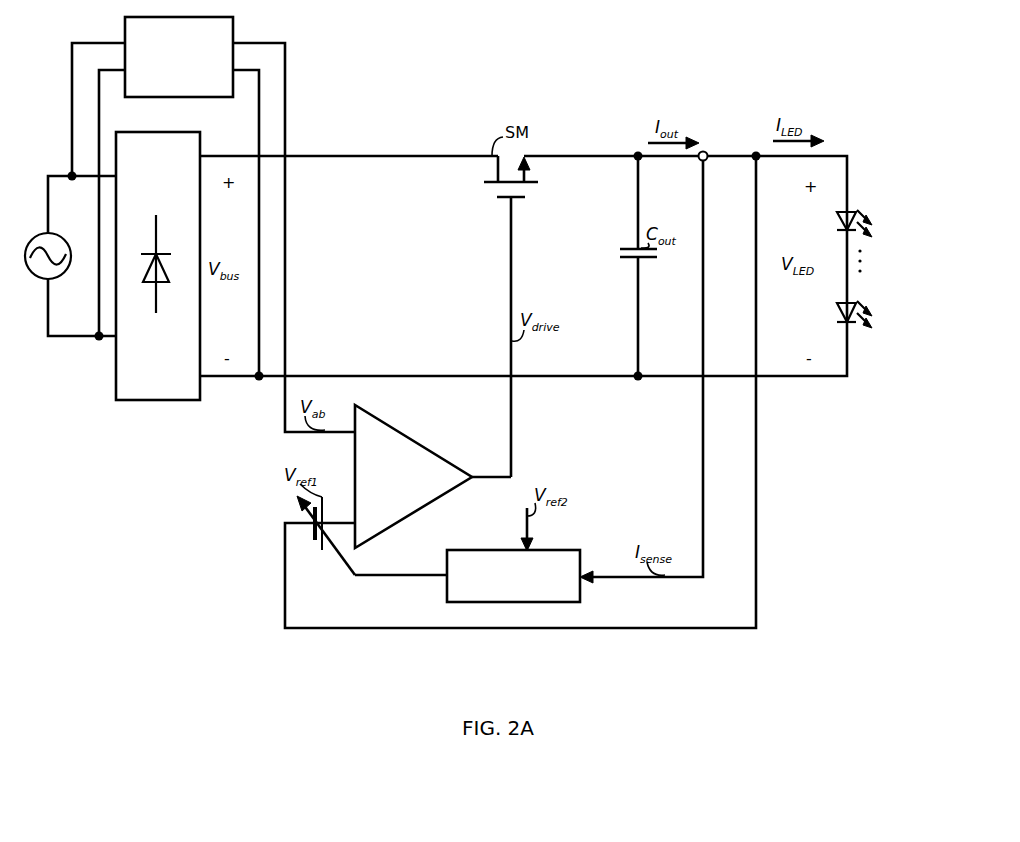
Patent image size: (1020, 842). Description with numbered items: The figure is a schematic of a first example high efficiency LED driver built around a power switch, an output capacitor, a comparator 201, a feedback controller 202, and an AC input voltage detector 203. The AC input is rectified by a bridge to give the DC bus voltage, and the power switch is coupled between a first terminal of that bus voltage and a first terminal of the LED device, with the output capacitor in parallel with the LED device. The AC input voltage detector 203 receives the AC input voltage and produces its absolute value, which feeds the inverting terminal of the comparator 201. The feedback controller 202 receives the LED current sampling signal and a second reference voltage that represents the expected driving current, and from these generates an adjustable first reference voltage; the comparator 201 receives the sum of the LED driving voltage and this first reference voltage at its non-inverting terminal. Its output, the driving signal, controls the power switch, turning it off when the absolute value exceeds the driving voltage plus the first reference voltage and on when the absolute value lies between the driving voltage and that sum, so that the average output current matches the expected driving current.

The comparator 201 is at (387, 491).
The feedback controller 202 is at (498, 591).
The AC input voltage detector 203 is at (164, 66).